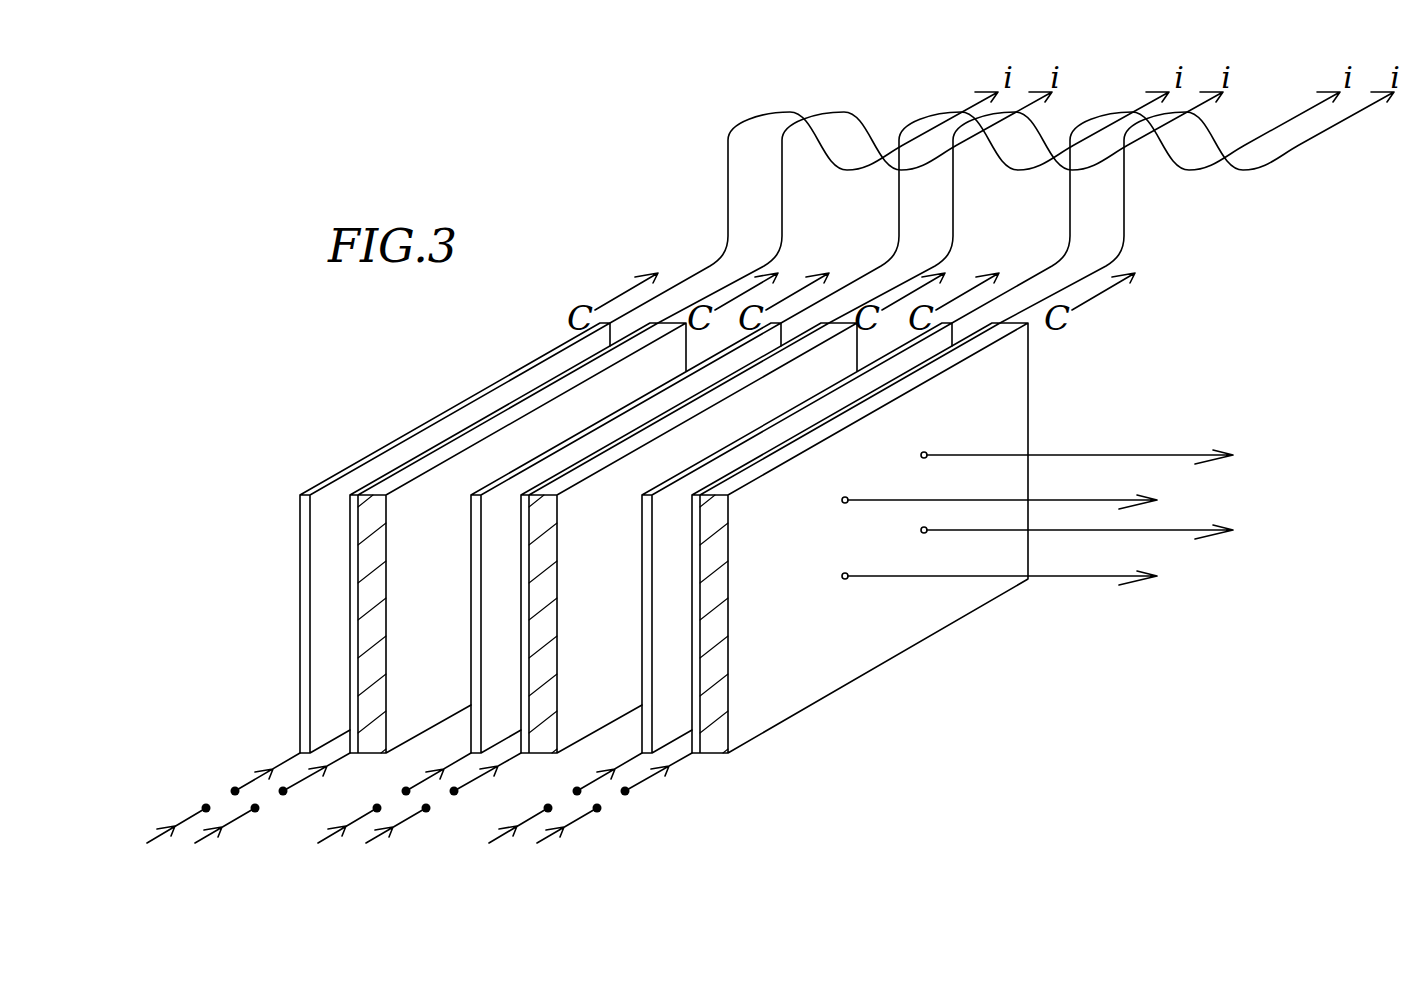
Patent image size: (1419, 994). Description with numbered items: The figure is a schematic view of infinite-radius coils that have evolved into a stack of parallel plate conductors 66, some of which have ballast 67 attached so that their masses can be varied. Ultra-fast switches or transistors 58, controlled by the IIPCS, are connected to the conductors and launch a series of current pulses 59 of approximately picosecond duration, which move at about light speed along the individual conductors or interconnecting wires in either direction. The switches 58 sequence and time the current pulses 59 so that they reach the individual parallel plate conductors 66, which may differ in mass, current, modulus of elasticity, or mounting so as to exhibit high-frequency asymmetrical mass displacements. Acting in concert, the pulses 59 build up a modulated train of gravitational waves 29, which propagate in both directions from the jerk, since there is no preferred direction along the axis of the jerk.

The gravitational wave 29 is at (1063, 499).
The fast switches 58 is at (214, 794).
The current pulses 59 is at (728, 208).
The parallel plate conductors 66 is at (352, 692).
The ballast 67 is at (373, 755).